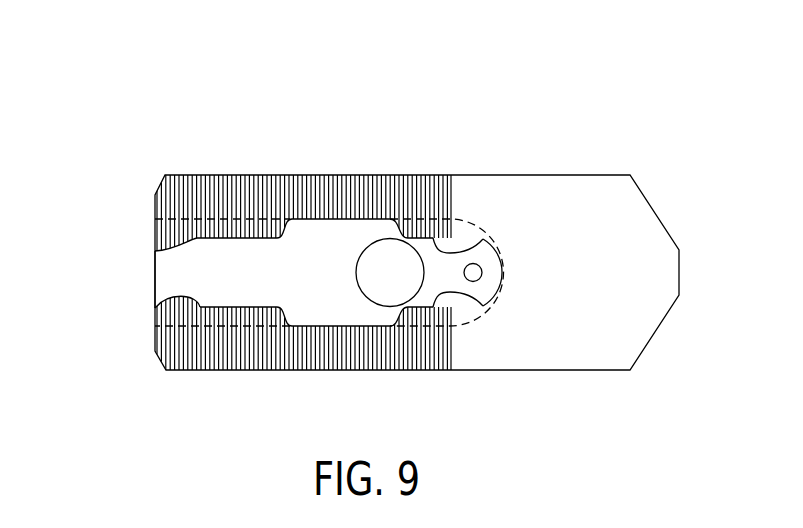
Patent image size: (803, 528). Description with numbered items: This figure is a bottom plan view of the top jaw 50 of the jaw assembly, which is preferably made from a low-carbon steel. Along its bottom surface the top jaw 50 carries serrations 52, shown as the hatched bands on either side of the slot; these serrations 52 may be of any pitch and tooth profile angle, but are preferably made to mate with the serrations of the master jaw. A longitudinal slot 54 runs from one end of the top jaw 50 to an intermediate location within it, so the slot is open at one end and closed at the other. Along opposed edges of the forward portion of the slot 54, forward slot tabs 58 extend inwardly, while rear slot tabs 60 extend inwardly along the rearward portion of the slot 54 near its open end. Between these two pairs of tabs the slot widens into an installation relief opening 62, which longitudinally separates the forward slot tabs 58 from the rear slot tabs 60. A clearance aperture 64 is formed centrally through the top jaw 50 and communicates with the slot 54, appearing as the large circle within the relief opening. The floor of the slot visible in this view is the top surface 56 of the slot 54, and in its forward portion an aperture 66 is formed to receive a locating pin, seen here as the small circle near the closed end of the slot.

The top jaw 50 is at (610, 150).
The serrations 52 is at (290, 355).
The longitudinal slot 54 is at (177, 280).
The top surface of the slot 56 is at (257, 287).
The forward slot tabs 58 is at (445, 250).
The rear slot tabs 60 is at (153, 250).
The installation relief opening 62 is at (340, 228).
The clearance aperture 64 is at (395, 285).
The aperture 66 is at (483, 272).